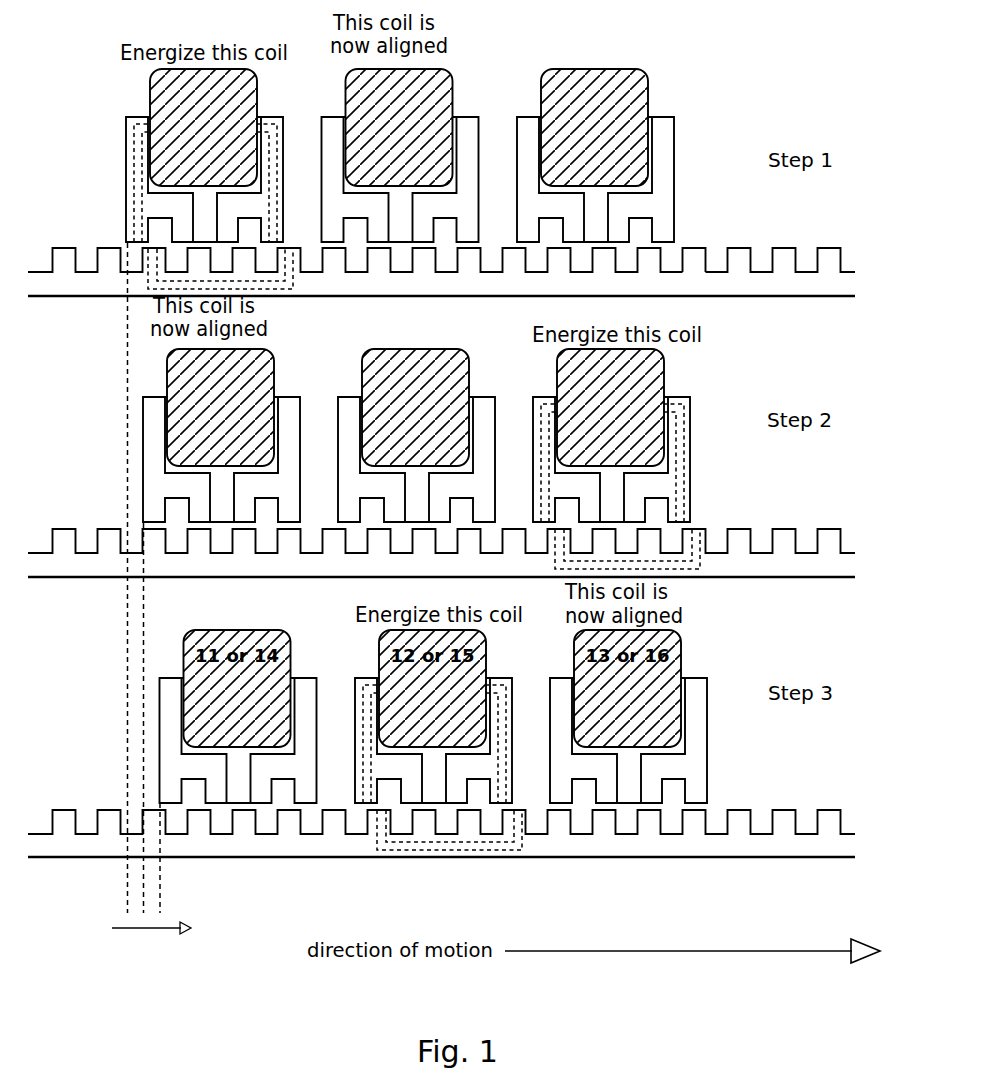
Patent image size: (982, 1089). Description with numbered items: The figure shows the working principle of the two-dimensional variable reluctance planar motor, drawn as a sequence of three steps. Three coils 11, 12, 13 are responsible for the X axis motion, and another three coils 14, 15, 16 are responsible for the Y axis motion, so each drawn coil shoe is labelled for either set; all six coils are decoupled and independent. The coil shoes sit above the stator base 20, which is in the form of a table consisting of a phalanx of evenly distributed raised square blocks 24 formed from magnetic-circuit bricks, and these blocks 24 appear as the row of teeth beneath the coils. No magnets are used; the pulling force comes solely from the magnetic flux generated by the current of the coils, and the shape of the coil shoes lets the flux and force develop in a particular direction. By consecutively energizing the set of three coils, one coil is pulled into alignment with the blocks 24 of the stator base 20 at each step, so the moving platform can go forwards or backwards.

The coil 11 is at (209, 179).
The coil 12 is at (400, 155).
The coil 13 is at (595, 155).
The coil 14 is at (221, 435).
The coil 15 is at (416, 435).
The coil 16 is at (616, 459).
The stator base 20 is at (838, 286).
The raised square block 24 is at (693, 258).